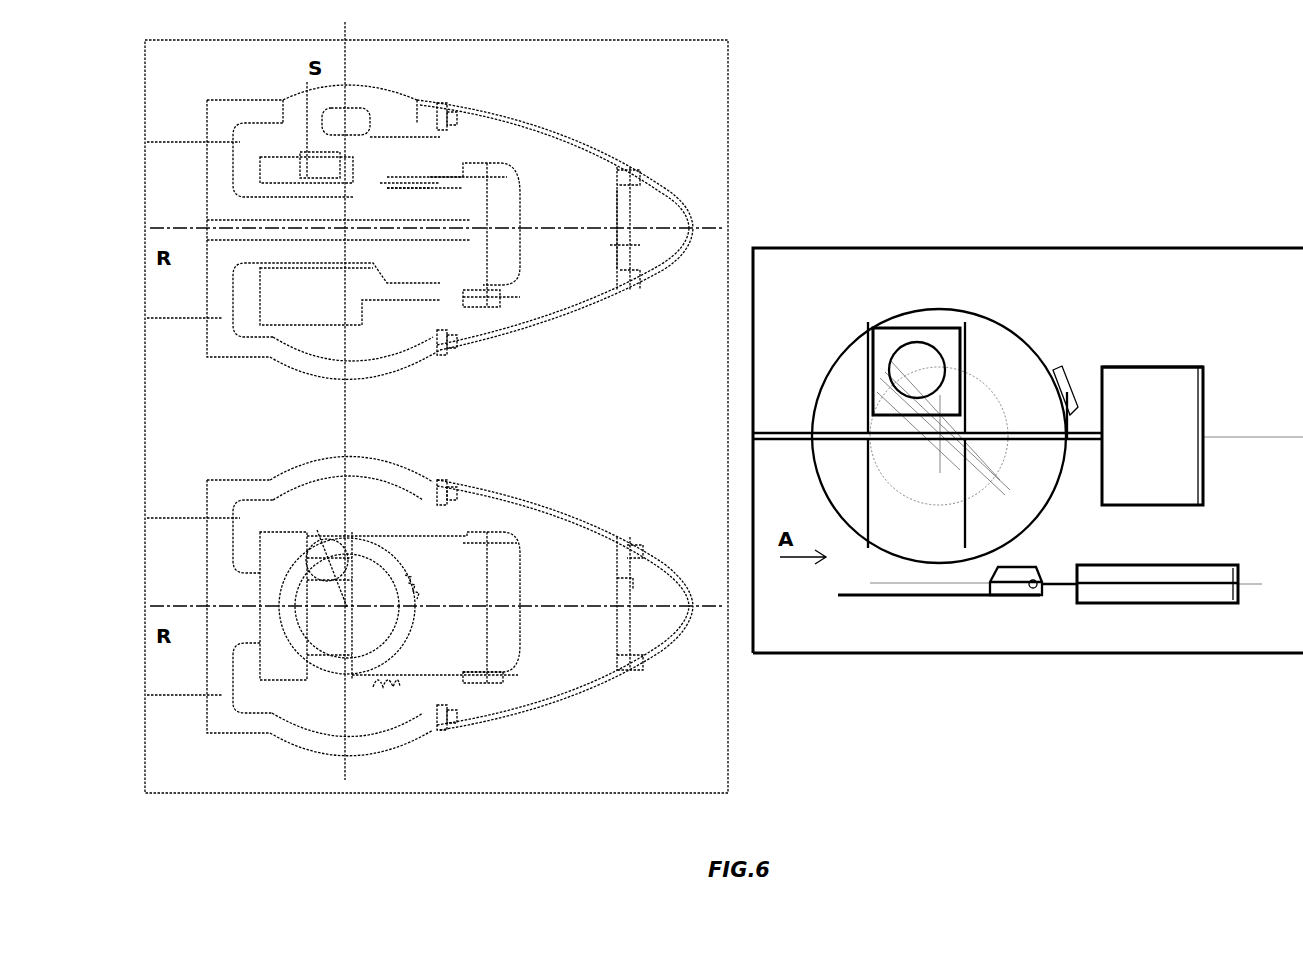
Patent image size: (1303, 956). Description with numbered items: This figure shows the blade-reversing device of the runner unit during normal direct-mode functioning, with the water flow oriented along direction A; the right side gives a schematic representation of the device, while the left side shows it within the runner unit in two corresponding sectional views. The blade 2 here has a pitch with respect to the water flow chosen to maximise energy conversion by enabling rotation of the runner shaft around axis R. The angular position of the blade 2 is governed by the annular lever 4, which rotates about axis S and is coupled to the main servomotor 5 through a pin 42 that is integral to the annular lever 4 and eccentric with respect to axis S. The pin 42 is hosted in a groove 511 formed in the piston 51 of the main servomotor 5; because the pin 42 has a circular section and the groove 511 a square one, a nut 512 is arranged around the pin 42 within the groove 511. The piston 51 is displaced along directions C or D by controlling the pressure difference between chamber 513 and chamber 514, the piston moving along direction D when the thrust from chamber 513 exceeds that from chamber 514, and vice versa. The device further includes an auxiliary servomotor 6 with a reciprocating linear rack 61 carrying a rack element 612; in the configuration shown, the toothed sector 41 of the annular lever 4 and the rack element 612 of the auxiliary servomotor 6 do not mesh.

The blade 2 is at (932, 427).
The annular lever 4 is at (372, 137).
The toothed sector 41 is at (1068, 383).
The pin 42 is at (322, 160).
The main servomotor 5 is at (1180, 348).
The piston 51 is at (498, 173).
The groove 511 is at (880, 422).
The nut 512 is at (888, 343).
The chamber 513 is at (490, 210).
The chamber 514 is at (416, 187).
The auxiliary servomotor 6 is at (1226, 555).
The reciprocating linear rack 61 is at (1069, 586).
The rack element 612 is at (1015, 583).